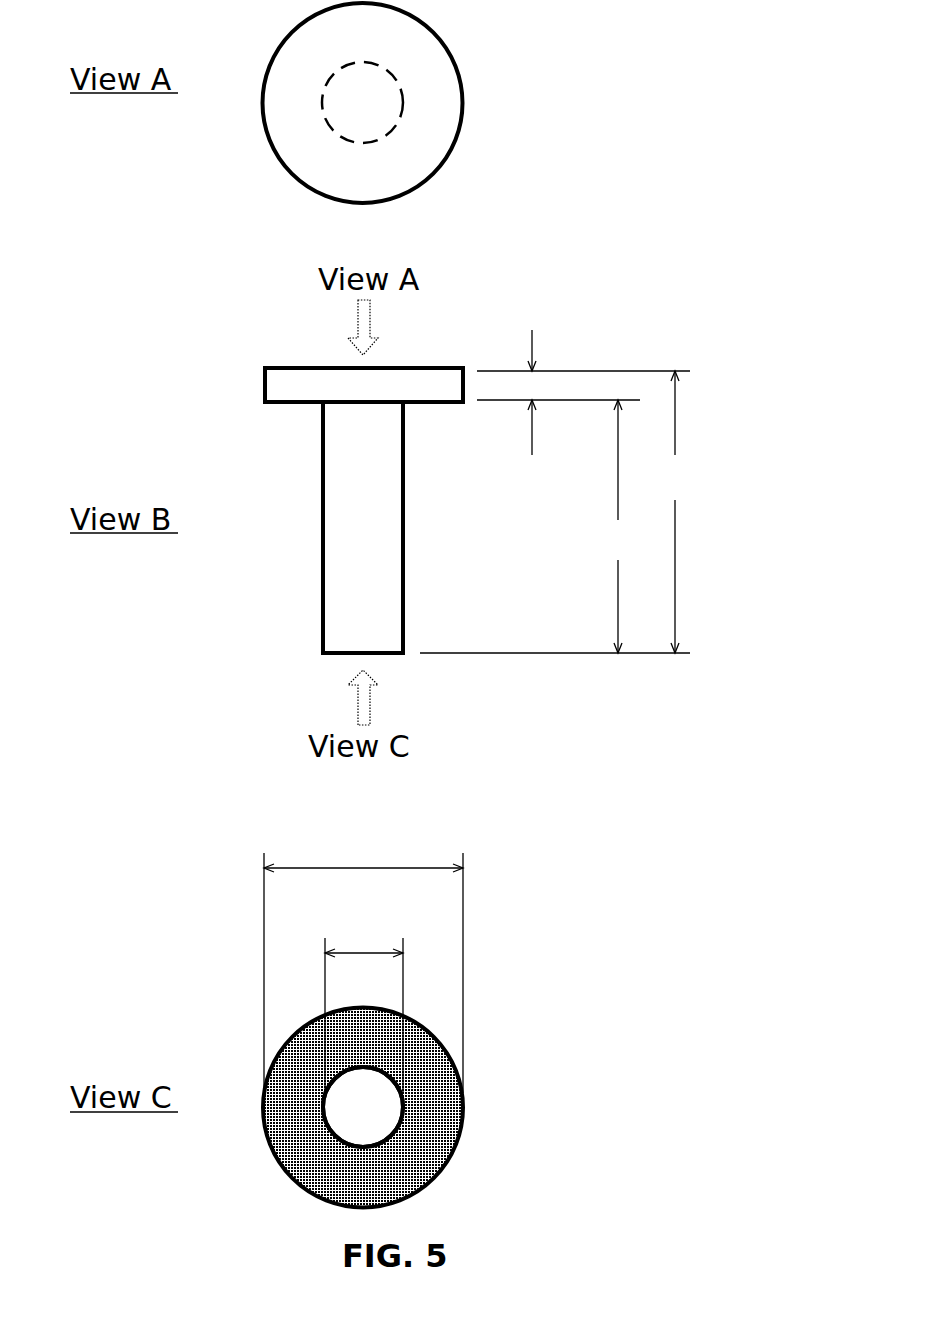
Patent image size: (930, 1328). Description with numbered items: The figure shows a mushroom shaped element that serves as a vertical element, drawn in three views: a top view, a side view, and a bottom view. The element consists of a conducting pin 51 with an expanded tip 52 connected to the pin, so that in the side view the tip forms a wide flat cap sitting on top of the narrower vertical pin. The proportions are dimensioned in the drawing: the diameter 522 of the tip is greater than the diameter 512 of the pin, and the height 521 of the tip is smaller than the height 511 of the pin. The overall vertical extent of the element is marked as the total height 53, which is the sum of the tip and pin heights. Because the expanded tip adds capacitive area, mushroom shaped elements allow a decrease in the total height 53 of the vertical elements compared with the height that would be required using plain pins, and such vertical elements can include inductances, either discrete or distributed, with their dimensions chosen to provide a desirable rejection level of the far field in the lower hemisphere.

The conducting pin 51 is at (378, 115).
The expanded tip 52 is at (435, 78).
The total height 53 is at (676, 512).
The height of the pin 511 is at (604, 526).
The diameter of the pin 512 is at (364, 933).
The height of the tip 521 is at (536, 357).
The diameter of the tip 522 is at (363, 848).